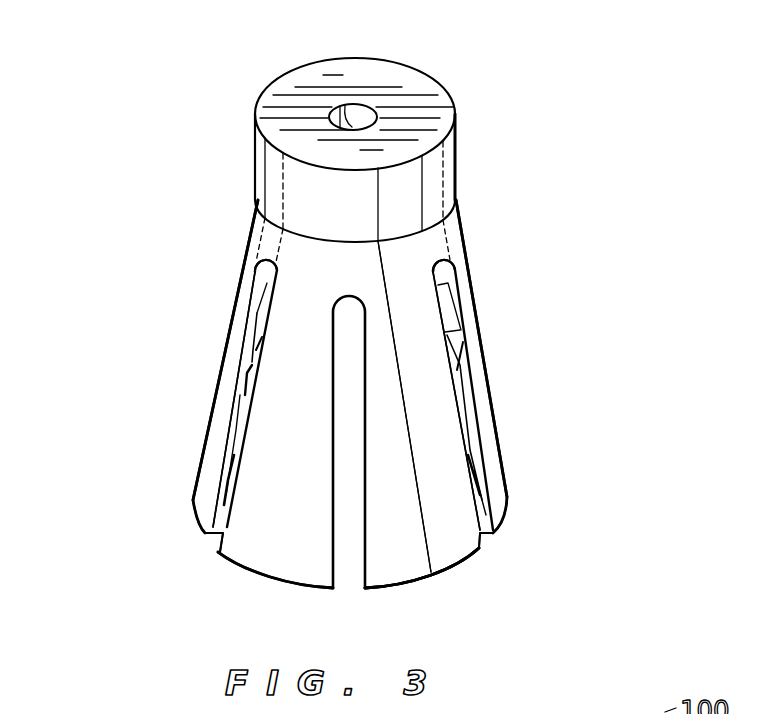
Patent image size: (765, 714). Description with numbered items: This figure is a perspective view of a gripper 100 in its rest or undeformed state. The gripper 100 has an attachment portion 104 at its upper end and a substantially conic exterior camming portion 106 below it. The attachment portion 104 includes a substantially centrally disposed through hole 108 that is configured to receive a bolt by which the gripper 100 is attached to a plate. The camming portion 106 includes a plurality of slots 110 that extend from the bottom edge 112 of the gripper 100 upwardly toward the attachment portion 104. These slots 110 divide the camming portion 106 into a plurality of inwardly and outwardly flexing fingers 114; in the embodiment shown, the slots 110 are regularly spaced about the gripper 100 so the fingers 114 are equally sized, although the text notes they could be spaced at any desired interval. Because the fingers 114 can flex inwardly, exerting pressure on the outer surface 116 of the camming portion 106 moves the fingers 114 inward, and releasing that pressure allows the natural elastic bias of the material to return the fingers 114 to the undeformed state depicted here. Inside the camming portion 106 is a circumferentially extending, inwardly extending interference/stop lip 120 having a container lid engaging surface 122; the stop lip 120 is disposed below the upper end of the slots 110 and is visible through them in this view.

The gripper 100 is at (230, 172).
The attachment portion 104 is at (457, 140).
The camming portion 106 is at (205, 418).
The through hole 108 is at (362, 112).
The slot 110 is at (225, 452).
The bottom edge 112 is at (457, 568).
The finger 114 is at (282, 573).
The outer surface 116 is at (440, 417).
The stop lip 120 is at (253, 348).
The container lid engaging surface 122 is at (242, 385).